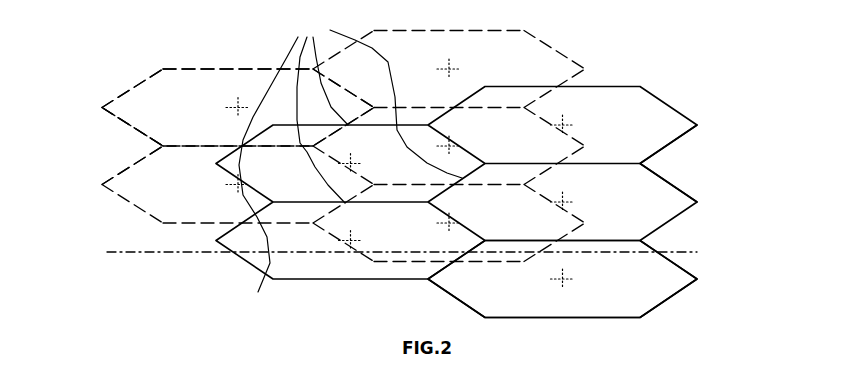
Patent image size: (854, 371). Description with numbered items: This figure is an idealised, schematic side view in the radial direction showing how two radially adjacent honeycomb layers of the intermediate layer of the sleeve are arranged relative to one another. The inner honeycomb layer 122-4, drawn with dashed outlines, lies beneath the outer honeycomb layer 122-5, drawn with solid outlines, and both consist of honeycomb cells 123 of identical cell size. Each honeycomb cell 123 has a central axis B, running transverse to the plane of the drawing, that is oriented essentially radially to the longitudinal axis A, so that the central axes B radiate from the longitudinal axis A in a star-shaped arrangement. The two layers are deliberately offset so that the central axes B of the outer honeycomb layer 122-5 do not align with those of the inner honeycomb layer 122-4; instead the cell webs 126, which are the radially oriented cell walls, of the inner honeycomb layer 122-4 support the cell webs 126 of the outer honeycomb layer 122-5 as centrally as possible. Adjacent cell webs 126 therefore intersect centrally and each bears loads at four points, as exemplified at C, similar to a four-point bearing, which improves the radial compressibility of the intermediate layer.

The inner honeycomb layer 122-4 is at (205, 54).
The outer honeycomb layer 122-5 is at (666, 90).
The honeycomb cell 123 is at (183, 120).
The cell web 126 is at (132, 165).
The longitudinal axis A is at (678, 250).
The central axis B is at (449, 69).
The four-point bearing location C is at (350, 154).